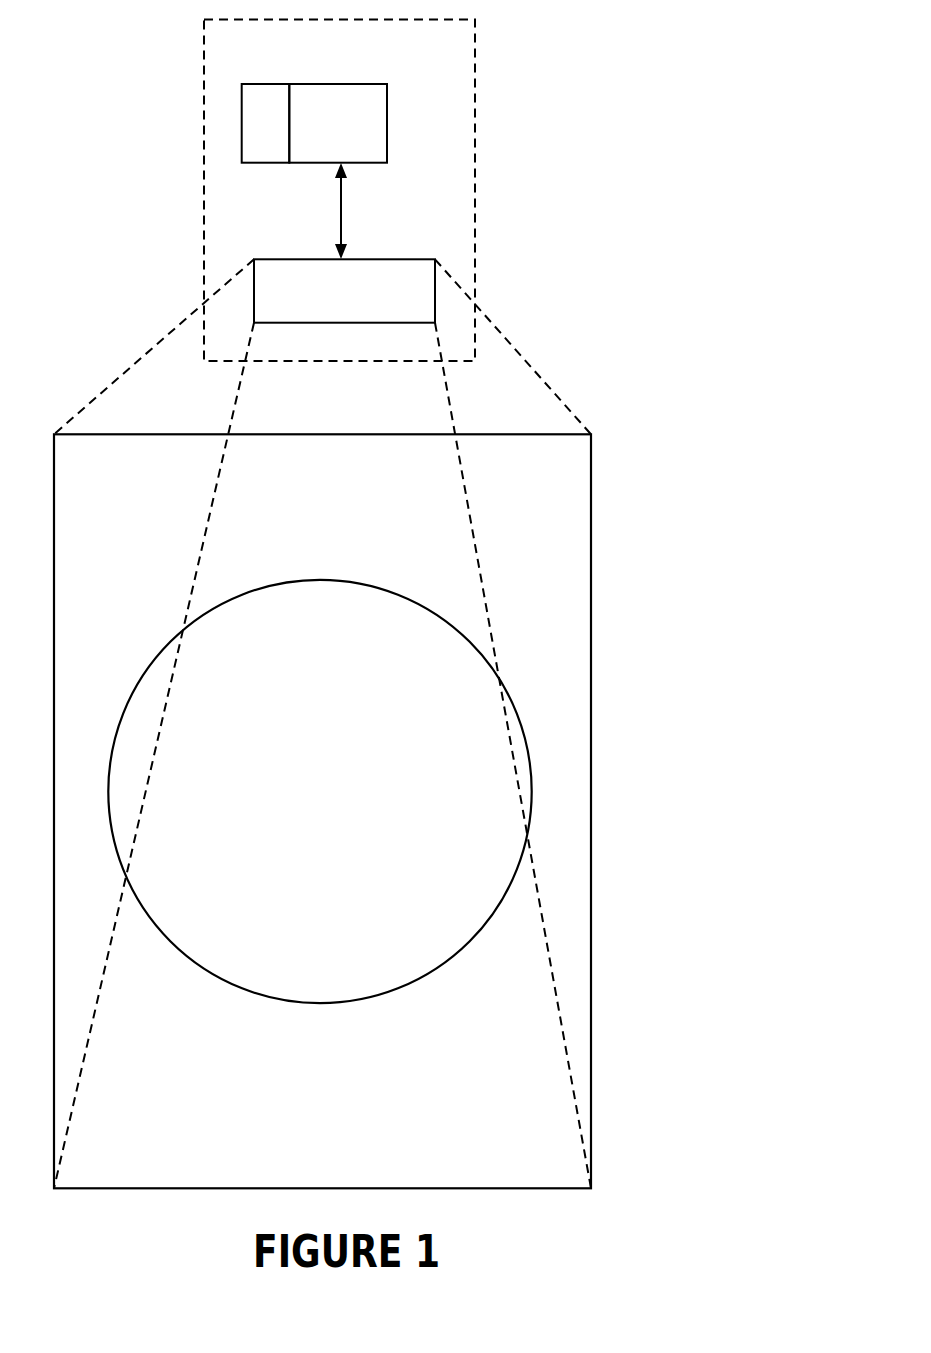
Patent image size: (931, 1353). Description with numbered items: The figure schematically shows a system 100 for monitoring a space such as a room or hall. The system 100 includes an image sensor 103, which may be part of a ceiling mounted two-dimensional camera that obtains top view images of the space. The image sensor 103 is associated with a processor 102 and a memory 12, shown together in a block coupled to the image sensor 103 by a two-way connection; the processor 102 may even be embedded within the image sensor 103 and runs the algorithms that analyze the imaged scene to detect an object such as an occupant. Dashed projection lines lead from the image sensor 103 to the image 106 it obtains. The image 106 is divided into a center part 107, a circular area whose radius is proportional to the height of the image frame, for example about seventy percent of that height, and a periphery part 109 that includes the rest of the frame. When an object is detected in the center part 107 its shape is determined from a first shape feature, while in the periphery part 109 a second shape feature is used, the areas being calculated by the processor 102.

The system 100 is at (480, 184).
The memory 12 is at (285, 128).
The processor 102 is at (382, 128).
The image sensor 103 is at (371, 317).
The image 106 is at (605, 988).
The center part 107 is at (442, 793).
The periphery part 109 is at (552, 580).